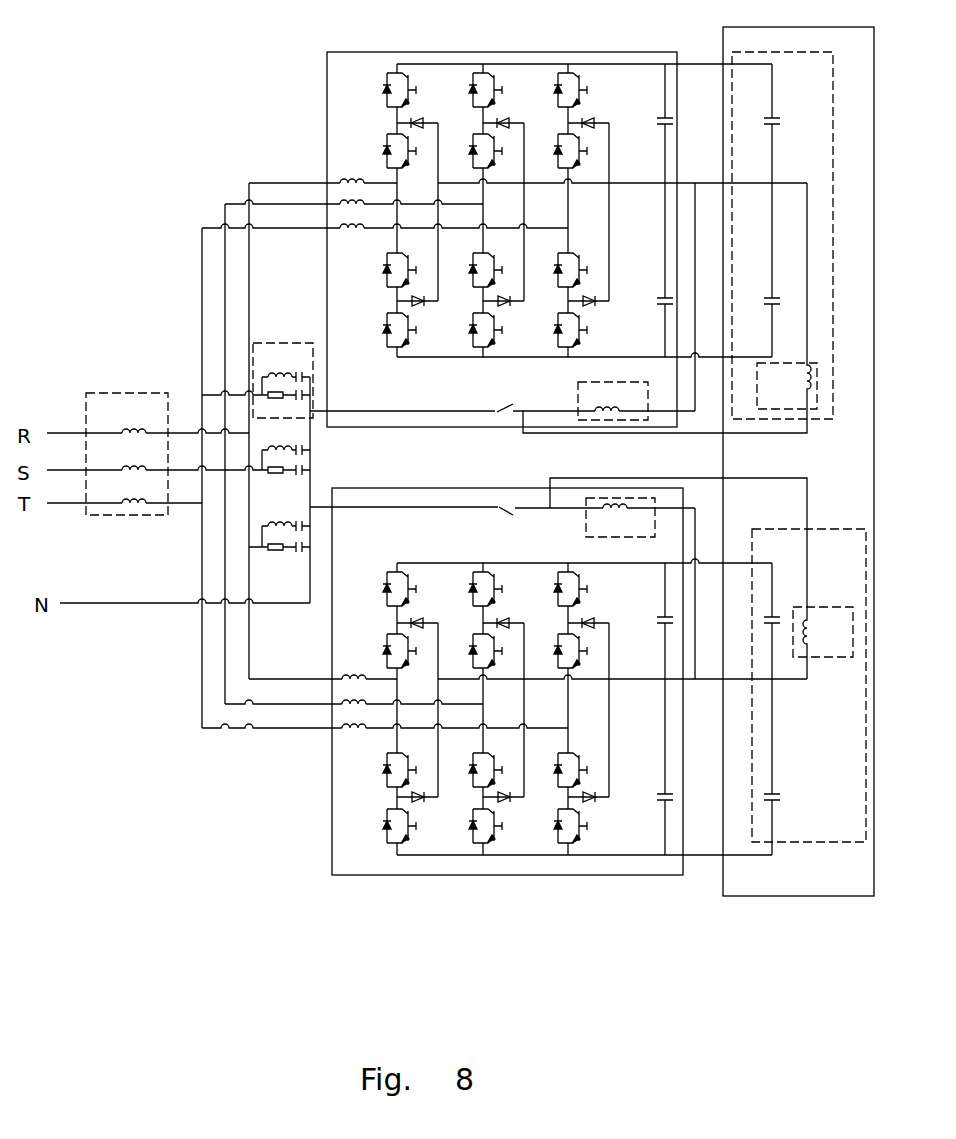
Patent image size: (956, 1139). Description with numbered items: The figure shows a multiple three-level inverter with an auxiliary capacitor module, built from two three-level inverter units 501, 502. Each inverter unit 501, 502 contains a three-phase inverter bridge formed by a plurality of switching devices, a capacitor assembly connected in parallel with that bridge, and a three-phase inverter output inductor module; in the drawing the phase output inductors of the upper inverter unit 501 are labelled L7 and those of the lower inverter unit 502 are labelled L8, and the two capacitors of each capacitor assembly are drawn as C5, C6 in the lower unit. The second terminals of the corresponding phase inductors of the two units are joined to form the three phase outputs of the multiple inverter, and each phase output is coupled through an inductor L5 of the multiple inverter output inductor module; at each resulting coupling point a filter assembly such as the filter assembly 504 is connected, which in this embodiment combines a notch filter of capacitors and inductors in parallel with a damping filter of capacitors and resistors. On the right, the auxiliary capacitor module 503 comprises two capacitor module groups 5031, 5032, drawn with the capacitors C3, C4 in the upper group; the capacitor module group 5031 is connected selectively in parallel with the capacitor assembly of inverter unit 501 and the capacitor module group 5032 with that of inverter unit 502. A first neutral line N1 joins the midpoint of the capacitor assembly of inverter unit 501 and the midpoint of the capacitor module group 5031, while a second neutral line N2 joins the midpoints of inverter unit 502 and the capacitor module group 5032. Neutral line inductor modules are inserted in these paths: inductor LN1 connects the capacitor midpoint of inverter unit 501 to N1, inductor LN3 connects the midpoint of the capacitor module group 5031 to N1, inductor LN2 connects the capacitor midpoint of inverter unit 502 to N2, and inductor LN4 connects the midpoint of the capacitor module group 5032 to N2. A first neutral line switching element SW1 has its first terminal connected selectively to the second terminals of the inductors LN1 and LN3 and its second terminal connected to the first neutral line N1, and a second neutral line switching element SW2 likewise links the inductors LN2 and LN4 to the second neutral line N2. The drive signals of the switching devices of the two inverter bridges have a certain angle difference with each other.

The three-level inverter unit 501 is at (545, 52).
The three-level inverter unit 502 is at (569, 711).
The auxiliary capacitor module 503 is at (798, 493).
The capacitor module group 5031 is at (799, 267).
The capacitor module group 5032 is at (809, 708).
The filter assembly 504 is at (288, 340).
The inductor L5 is at (127, 454).
The first output inductor L7 is at (351, 191).
The second output inductor L8 is at (354, 690).
The capacitor C3 is at (758, 121).
The capacitor C4 is at (758, 300).
The capacitor C5 is at (651, 621).
The capacitor C6 is at (651, 798).
The inductor LN1 is at (613, 401).
The inductor LN2 is at (620, 518).
The inductor LN3 is at (787, 386).
The inductor LN4 is at (824, 632).
The first neutral line switching element SW1 is at (504, 397).
The second neutral line switching element SW2 is at (518, 500).
The first neutral line N1 is at (402, 397).
The second neutral line N2 is at (404, 497).